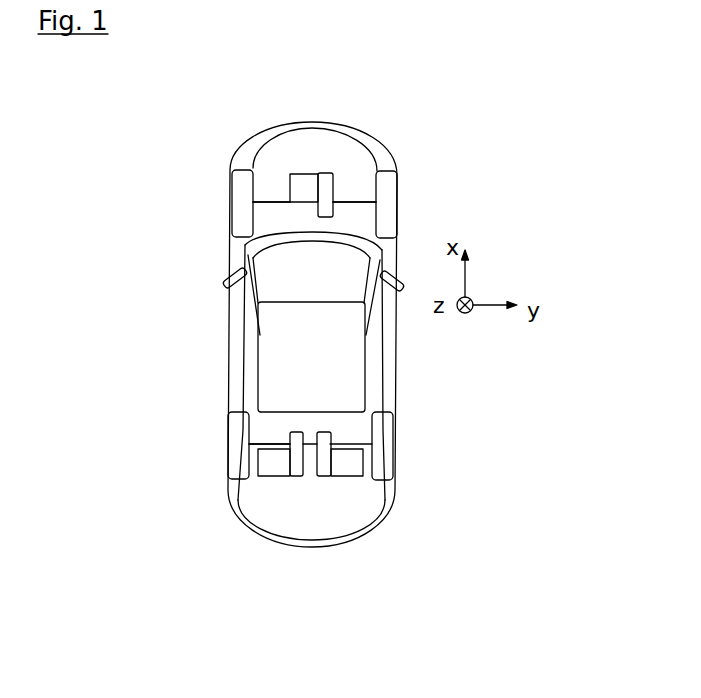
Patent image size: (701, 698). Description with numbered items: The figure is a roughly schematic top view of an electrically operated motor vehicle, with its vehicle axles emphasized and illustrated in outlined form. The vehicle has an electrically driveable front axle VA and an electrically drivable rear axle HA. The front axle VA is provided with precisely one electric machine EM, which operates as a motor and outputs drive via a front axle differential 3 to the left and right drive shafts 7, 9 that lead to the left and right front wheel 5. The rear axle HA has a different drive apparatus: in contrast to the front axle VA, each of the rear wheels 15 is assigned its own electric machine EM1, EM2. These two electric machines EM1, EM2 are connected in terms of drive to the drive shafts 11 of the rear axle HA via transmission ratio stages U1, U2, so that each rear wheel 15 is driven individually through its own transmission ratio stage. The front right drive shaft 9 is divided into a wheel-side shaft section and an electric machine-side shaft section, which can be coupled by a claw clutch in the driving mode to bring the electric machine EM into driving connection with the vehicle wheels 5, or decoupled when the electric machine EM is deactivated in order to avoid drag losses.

The front axle differential 3 is at (322, 180).
The front wheel 5 is at (232, 173).
The left drive shaft 7 is at (272, 201).
The front right drive shaft 9 is at (346, 200).
The drive shaft of the rear axle 11 is at (255, 446).
The rear wheel 15 is at (237, 443).
The electric machine EM is at (305, 176).
The electric machine EM1 is at (280, 477).
The electric machine EM2 is at (352, 478).
The transmission ratio stage U1 is at (297, 477).
The transmission ratio stage U2 is at (323, 478).
The front axle VA is at (220, 193).
The rear axle HA is at (211, 468).